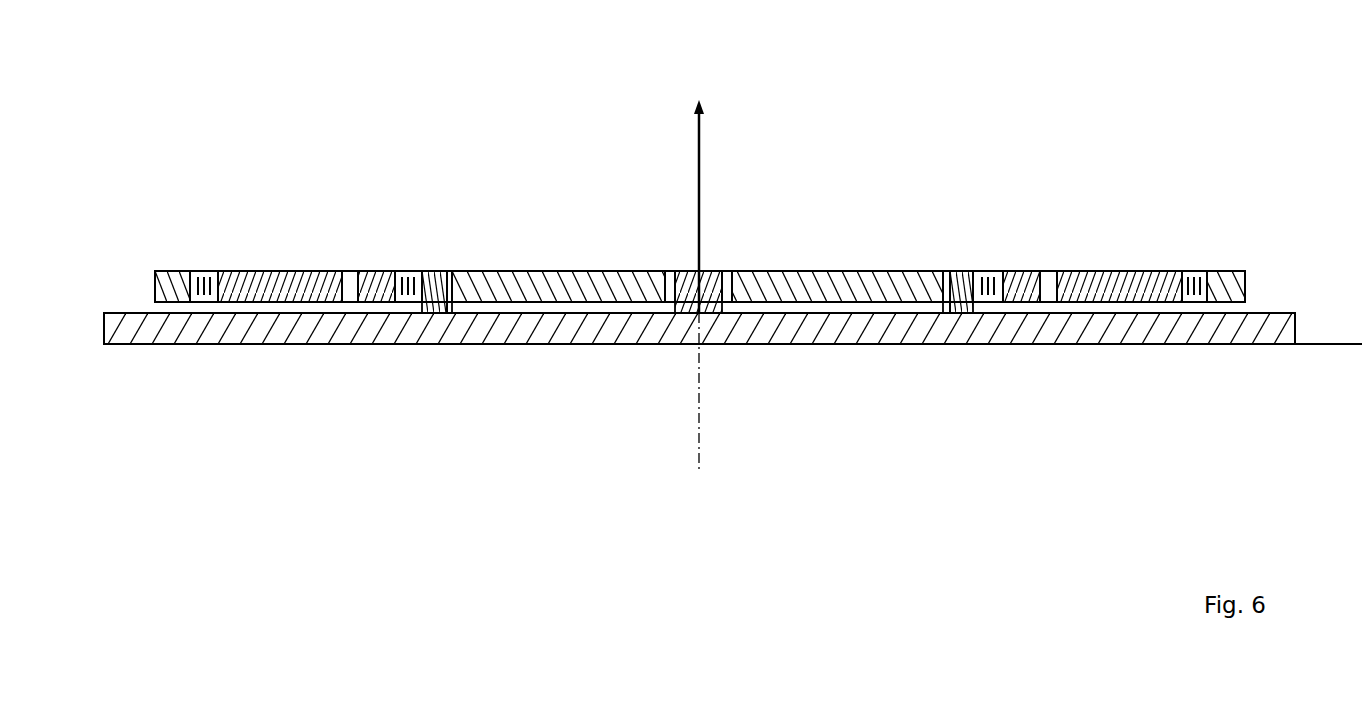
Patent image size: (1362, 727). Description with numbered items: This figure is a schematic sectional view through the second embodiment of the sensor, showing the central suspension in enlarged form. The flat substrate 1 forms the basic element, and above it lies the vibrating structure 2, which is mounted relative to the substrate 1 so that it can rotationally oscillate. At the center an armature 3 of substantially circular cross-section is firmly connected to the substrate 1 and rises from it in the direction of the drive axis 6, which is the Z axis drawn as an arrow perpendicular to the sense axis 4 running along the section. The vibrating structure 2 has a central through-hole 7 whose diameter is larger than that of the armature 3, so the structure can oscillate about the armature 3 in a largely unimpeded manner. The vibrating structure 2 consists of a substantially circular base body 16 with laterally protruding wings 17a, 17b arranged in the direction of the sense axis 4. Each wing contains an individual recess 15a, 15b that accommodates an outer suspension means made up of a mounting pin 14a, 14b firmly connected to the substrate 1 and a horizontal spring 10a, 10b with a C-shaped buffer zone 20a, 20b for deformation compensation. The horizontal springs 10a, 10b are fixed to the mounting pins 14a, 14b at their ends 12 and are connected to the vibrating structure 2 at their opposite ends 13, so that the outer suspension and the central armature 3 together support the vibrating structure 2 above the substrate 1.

The substrate 1 is at (370, 338).
The vibrating structure 2 is at (143, 277).
The armature 3 is at (710, 300).
The sense axis 4 is at (1360, 345).
The drive axis 6 is at (644, 175).
The central through-hole 7 is at (732, 270).
The horizontal spring 10a is at (1113, 270).
The horizontal spring 10b is at (265, 292).
The end of horizontal spring fixed to mounting pin 12 is at (418, 277).
The end of horizontal spring connected to vibrating structure 13 is at (205, 277).
The mounting pin 14a is at (957, 270).
The mounting pin 14b is at (434, 290).
The recess 15a is at (942, 293).
The recess 15b is at (452, 270).
The base body 16 is at (582, 285).
The wing 17a is at (1235, 270).
The wing 17b is at (172, 292).
The buffer zone 20a is at (1052, 292).
The buffer zone 20b is at (350, 277).